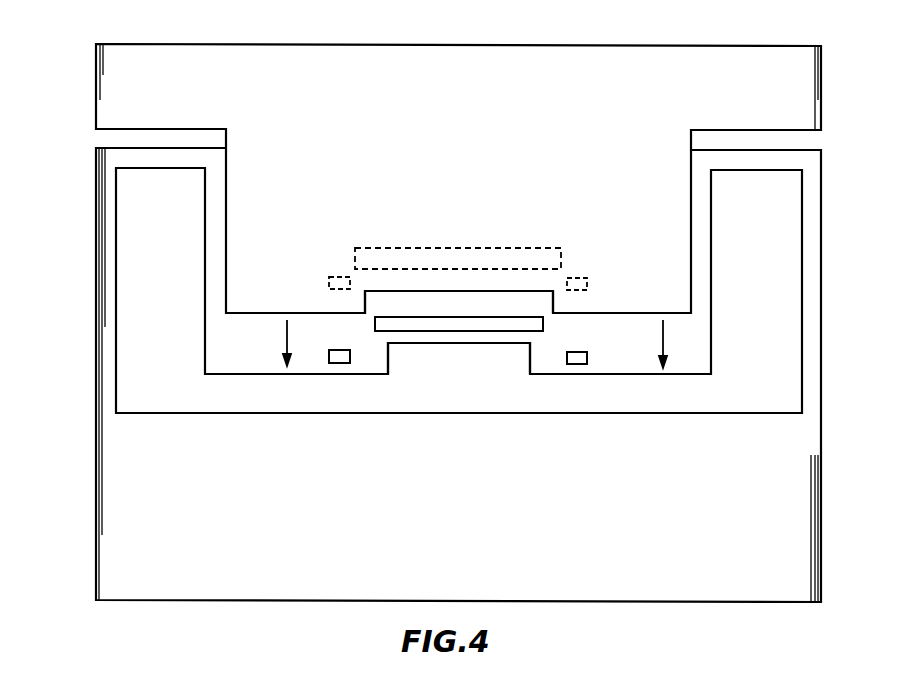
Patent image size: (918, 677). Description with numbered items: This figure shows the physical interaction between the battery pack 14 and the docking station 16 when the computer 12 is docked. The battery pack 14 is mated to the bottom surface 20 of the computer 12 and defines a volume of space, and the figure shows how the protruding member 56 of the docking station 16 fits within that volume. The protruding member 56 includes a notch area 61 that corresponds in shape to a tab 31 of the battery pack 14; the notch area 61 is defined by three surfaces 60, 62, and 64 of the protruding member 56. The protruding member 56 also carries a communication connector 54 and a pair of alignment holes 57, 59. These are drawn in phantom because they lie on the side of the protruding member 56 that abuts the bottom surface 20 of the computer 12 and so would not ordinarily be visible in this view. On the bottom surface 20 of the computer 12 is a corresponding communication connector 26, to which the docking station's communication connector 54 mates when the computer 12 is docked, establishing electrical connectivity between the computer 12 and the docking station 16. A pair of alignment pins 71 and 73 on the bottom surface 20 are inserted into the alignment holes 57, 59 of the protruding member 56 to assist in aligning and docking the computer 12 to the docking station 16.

The computer 12 is at (96, 311).
The battery pack 14 is at (116, 350).
The docking station 16 is at (96, 104).
The bottom surface 20 is at (123, 553).
The communication connector 26 is at (545, 325).
The tab 31 is at (476, 371).
The communication connector 54 is at (561, 248).
The protruding member 56 is at (258, 314).
The alignment hole 57 is at (335, 277).
The alignment hole 59 is at (587, 281).
The surface 60 is at (364, 303).
The notch area 61 is at (466, 314).
The surface 62 is at (517, 291).
The surface 64 is at (555, 302).
The alignment pin 71 is at (333, 364).
The alignment pin 73 is at (573, 365).